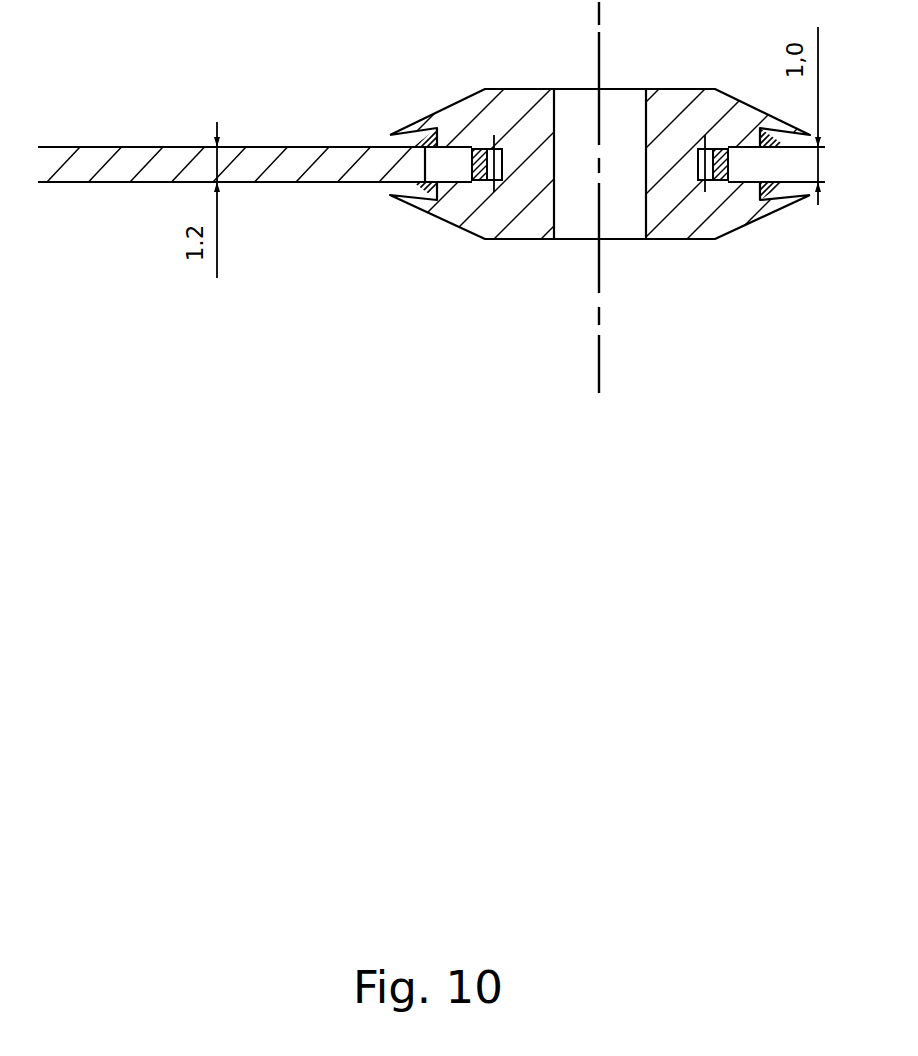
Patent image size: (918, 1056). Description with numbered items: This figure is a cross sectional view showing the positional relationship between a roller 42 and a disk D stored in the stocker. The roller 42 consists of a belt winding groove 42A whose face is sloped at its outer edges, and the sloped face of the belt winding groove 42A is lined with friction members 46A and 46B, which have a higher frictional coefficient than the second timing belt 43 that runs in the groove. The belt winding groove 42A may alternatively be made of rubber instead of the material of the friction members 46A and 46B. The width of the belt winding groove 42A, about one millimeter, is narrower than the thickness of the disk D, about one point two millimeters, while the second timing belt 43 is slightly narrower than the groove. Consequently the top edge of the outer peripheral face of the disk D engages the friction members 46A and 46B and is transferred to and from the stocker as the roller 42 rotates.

The roller 42 is at (658, 102).
The belt winding groove 42A is at (748, 167).
The second timing belt 43 is at (478, 149).
The friction member 46A is at (427, 146).
The friction member 46B is at (427, 184).
The disk D is at (173, 160).